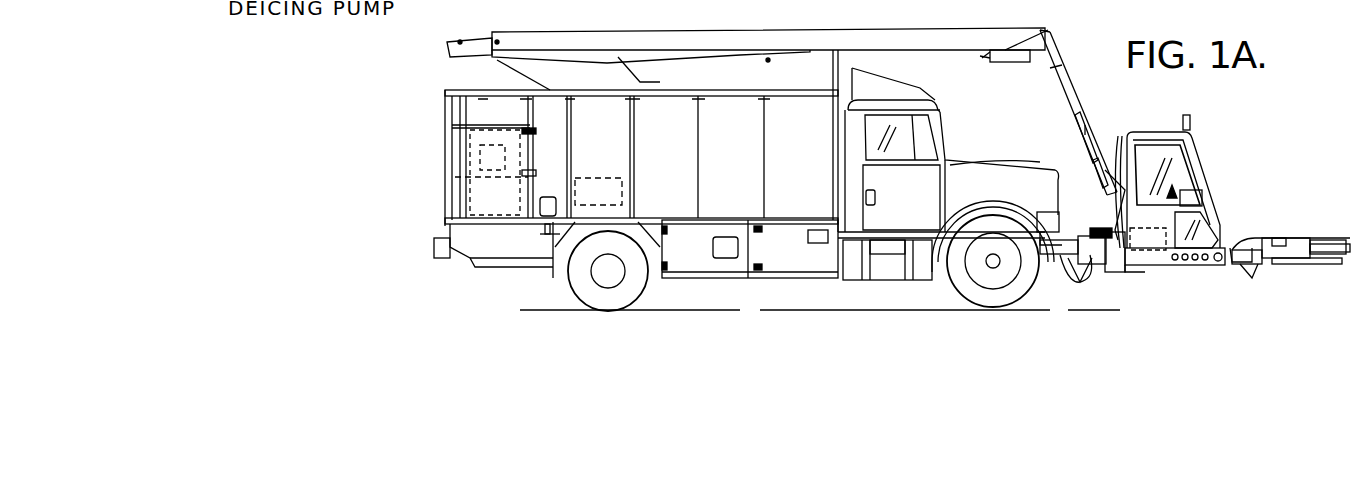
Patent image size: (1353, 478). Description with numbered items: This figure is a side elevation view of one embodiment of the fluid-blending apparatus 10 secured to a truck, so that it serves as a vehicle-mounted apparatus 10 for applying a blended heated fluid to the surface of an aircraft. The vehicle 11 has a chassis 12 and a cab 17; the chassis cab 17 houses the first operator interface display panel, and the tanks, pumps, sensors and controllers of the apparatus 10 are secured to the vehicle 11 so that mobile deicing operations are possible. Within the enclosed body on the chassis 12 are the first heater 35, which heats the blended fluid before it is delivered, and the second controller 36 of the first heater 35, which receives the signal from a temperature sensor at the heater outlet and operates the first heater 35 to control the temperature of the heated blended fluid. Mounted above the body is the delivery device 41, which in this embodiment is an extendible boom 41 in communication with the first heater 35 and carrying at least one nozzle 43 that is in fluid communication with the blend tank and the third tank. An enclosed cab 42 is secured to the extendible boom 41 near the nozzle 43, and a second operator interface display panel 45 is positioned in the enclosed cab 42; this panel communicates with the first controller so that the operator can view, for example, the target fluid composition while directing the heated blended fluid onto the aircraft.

The apparatus 10 is at (755, 82).
The vehicle 11 is at (440, 197).
The chassis 12 is at (485, 260).
The cab 17 is at (947, 147).
The first heater 35 is at (478, 182).
The second controller 36 is at (478, 140).
The delivery device 41 is at (1002, 33).
The enclosed cab 42 is at (1195, 147).
The nozzle 43 is at (1298, 232).
The second operator interface display panel 45 is at (1198, 198).